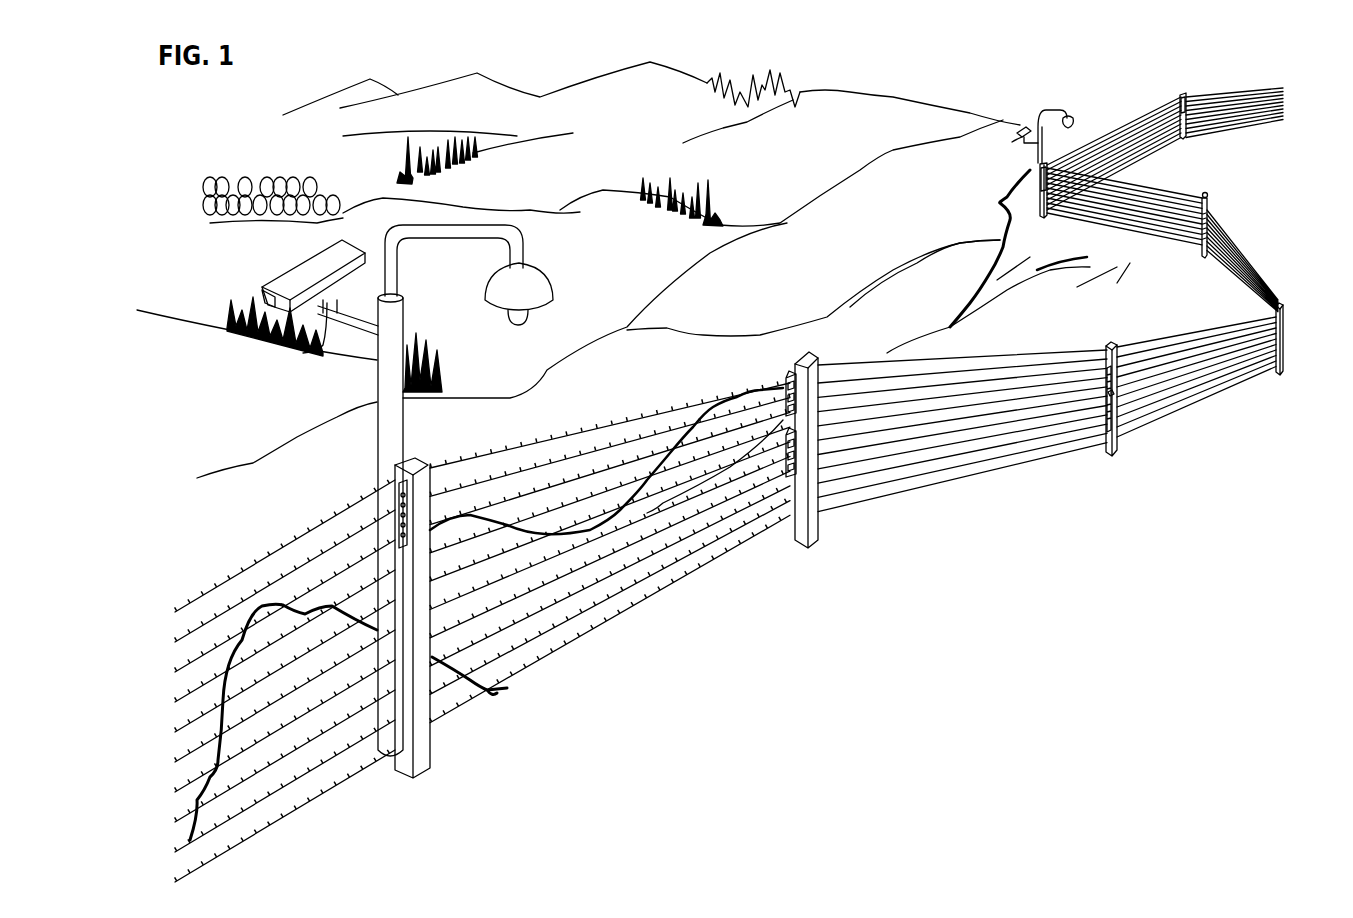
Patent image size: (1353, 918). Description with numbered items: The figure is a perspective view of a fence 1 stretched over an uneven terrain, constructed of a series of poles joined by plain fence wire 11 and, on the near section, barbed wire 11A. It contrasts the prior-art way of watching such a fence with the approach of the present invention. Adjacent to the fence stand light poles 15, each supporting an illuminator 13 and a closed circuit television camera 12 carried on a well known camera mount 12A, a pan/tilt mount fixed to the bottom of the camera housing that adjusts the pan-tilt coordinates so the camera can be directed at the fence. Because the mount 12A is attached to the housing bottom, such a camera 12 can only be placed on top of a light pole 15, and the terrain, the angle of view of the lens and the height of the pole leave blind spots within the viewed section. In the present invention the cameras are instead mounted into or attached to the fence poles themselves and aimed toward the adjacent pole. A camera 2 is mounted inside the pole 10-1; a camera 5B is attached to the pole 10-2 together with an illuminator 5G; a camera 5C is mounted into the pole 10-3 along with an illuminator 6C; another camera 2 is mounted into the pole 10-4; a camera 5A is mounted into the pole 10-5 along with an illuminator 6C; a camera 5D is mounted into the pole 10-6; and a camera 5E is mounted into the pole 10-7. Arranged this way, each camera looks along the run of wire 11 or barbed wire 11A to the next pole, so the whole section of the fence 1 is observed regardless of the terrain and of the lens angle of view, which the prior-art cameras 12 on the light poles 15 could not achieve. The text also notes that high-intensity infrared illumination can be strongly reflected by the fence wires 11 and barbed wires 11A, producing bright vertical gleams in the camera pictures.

The fence 1 is at (1096, 722).
The camera 2 is at (398, 485).
The camera 5A is at (1212, 232).
The camera 5B is at (805, 447).
The camera 5C is at (1108, 413).
The camera 5D is at (1058, 160).
The camera 5E is at (1182, 103).
The illuminator 5G is at (800, 370).
The illuminator 6C is at (1110, 396).
The pole 10-1 is at (430, 750).
The pole 10-2 is at (818, 528).
The pole 10-3 is at (1116, 448).
The pole 10-4 is at (1283, 337).
The pole 10-5 is at (1203, 240).
The pole 10-6 is at (1047, 217).
The pole 10-7 is at (1185, 103).
The wire 11 is at (958, 480).
The barbed wire 11A is at (605, 632).
The closed circuit television camera 12 is at (328, 268).
The camera mount 12A is at (322, 345).
The illuminator 13 is at (537, 288).
The light pole 15 is at (378, 375).